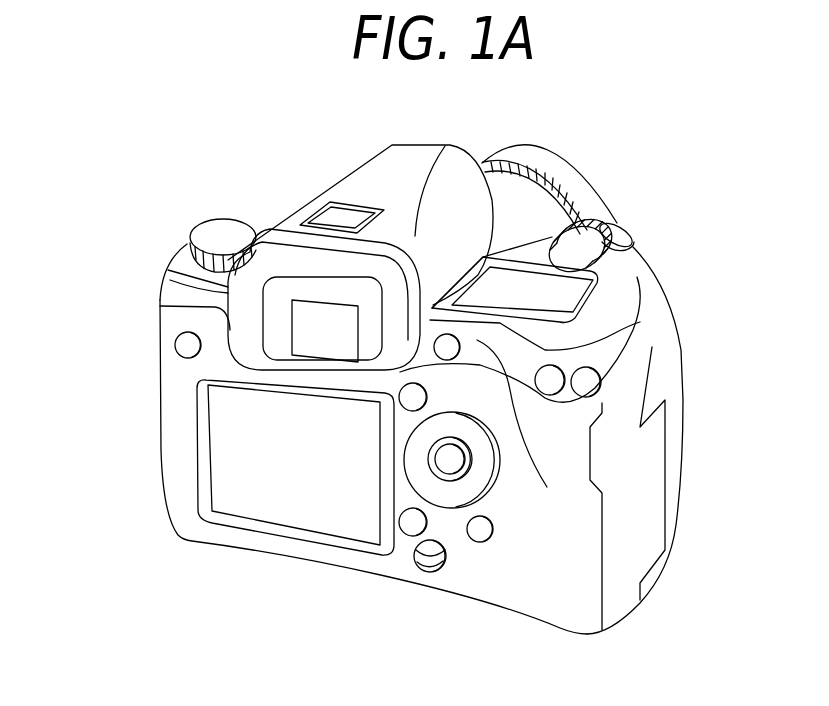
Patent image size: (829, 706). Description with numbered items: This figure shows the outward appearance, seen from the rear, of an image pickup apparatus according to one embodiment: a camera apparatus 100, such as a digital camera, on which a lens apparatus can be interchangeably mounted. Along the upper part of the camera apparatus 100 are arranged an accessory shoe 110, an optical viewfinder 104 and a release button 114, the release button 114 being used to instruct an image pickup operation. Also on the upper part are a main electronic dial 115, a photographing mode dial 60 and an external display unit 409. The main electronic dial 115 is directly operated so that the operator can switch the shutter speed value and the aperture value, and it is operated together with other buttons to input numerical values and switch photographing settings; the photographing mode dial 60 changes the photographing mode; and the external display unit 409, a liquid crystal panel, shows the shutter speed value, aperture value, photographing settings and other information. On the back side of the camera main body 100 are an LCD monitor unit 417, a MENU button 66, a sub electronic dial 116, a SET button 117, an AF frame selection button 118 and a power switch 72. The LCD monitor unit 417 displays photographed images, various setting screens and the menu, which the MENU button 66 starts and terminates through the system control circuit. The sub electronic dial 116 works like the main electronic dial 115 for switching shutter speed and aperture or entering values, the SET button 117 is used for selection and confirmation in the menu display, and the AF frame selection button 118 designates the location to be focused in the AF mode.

The camera apparatus 100 is at (170, 297).
The photographing mode dial 60 is at (218, 236).
The optical viewfinder 104 is at (320, 320).
The accessory shoe 110 is at (337, 218).
The external display unit 409 is at (524, 283).
The main electronic dial 115 is at (592, 222).
The release button 114 is at (620, 229).
The AF frame selection button 118 is at (585, 382).
The SET button 117 is at (450, 462).
The sub electronic dial 116 is at (453, 503).
The LCD monitor unit 417 is at (323, 507).
The power switch 72 is at (422, 568).
The MENU button 66 is at (183, 345).